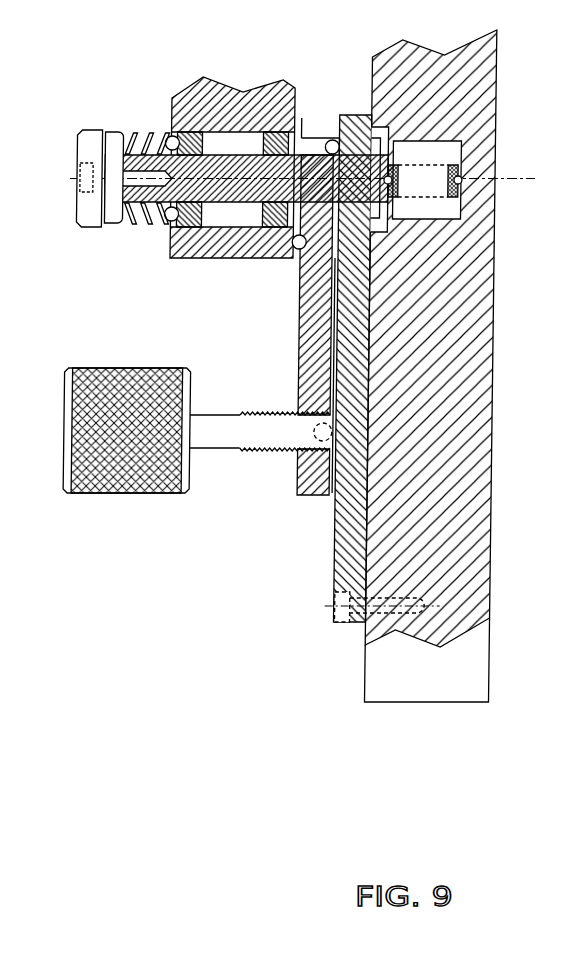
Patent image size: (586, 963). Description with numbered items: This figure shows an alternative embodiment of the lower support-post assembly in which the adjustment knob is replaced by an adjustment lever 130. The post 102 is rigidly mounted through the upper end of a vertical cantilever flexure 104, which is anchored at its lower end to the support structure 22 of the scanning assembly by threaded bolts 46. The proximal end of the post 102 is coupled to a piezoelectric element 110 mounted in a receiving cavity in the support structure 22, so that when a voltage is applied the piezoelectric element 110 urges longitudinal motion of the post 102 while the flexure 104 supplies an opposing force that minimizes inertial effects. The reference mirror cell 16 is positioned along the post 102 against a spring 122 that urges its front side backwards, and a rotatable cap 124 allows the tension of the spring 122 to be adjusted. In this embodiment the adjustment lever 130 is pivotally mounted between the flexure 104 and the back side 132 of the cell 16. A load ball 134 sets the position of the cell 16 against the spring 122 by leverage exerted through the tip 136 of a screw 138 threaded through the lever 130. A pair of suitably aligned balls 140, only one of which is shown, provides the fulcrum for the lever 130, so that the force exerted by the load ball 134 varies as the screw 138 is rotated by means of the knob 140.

The cell 16 is at (245, 92).
The support structure 22 is at (477, 687).
The threaded bolts 46 is at (338, 612).
The post 102 is at (190, 187).
The flexure 104 is at (338, 585).
The piezoelectric element 110 is at (432, 178).
The spring 122 is at (148, 130).
The rotatable cap 124 is at (78, 148).
The adjustment lever 130 is at (300, 372).
The back side 132 is at (301, 118).
The load ball 134 is at (300, 250).
The tip 136 is at (336, 493).
The screw 138 is at (283, 432).
The balls / knob 140 is at (332, 140).